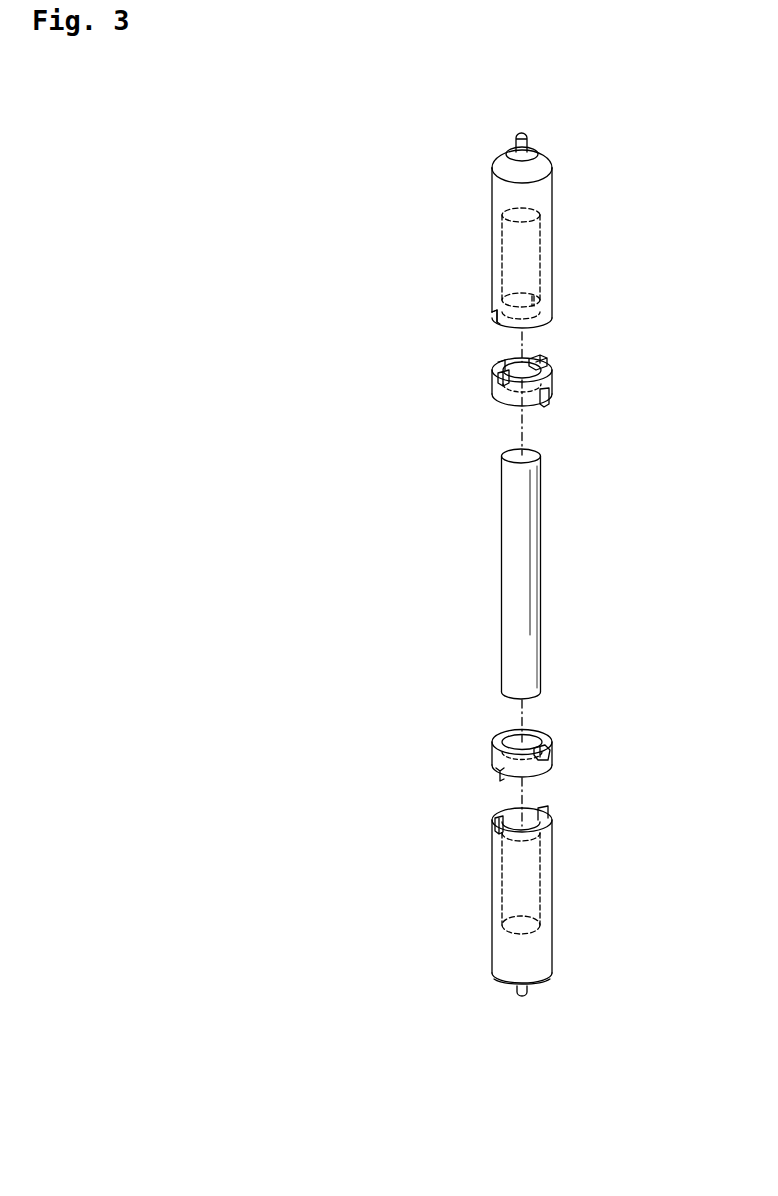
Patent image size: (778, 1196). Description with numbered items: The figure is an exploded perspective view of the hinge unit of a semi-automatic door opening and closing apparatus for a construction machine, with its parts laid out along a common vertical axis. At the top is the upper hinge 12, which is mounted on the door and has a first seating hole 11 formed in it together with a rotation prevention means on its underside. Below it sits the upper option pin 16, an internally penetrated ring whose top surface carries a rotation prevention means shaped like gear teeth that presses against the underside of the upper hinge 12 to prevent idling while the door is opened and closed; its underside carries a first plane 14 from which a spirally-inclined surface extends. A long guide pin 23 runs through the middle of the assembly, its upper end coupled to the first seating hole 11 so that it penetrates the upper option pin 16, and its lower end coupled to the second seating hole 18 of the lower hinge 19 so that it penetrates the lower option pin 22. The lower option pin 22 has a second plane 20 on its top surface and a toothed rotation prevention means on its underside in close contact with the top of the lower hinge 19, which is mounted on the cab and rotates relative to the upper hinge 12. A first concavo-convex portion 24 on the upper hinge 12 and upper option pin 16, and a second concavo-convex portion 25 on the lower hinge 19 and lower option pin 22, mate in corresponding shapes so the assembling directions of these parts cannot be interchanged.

The first seating hole 11 is at (540, 254).
The upper hinge 12 is at (552, 197).
The first plane 14 is at (548, 405).
The upper option pin 16 is at (552, 383).
The second seating hole 18 is at (540, 872).
The lower hinge 19 is at (552, 947).
The second plane 20 is at (548, 732).
The lower option pin 22 is at (550, 752).
The guide pin 23 is at (541, 572).
The first concavo-convex portion 24 is at (500, 322).
The second concavo-convex portion 25 is at (503, 778).